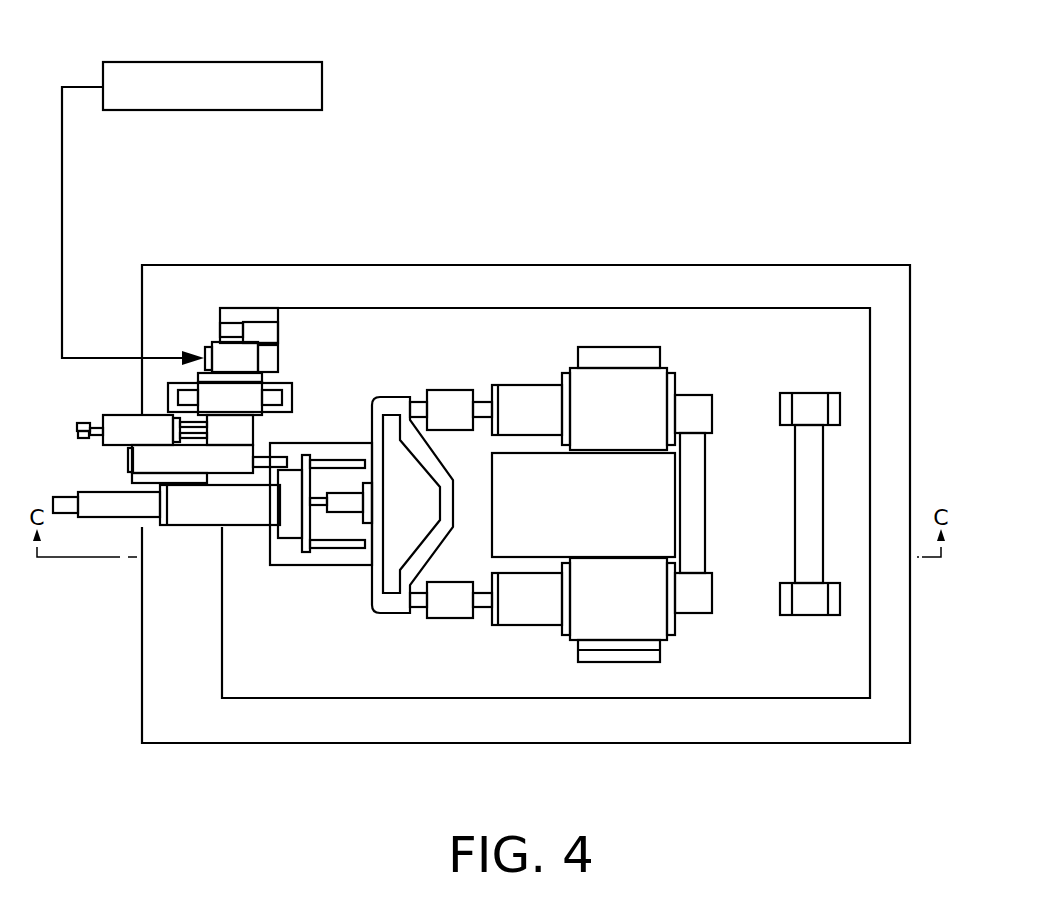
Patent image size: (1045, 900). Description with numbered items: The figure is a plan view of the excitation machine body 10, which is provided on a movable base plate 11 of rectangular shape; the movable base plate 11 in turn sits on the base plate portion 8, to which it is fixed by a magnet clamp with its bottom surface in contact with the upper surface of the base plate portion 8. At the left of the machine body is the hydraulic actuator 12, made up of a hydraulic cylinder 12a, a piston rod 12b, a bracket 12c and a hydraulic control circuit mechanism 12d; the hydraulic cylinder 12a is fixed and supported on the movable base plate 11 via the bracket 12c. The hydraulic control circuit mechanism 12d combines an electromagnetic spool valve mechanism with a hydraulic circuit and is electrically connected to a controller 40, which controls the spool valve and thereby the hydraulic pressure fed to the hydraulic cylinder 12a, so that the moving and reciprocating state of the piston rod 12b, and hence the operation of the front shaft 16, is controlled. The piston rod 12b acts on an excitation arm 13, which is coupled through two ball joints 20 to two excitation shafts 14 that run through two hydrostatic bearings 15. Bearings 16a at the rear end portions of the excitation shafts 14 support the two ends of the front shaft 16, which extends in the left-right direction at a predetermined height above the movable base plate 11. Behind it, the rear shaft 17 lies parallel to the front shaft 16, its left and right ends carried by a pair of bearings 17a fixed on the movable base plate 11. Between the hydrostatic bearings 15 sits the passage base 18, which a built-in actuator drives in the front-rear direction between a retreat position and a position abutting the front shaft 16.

The base plate portion 8 is at (588, 263).
The excitation machine body 10 is at (704, 199).
The movable base plate 11 is at (770, 307).
The hydraulic actuator 12 is at (212, 411).
The hydraulic cylinder 12a is at (210, 527).
The piston rod 12b is at (323, 497).
The bracket 12c is at (318, 555).
The hydraulic control circuit mechanism 12d is at (267, 307).
The excitation arm 13 is at (393, 396).
The excitation shaft 14 is at (525, 385).
The hydrostatic bearing 15 is at (573, 367).
The front shaft 16 is at (708, 522).
The bearing 16a is at (690, 393).
The rear shaft 17 is at (827, 495).
The bearing 17a is at (808, 392).
The passage base 18 is at (490, 517).
The ball joint 20 is at (450, 390).
The controller 40 is at (298, 61).